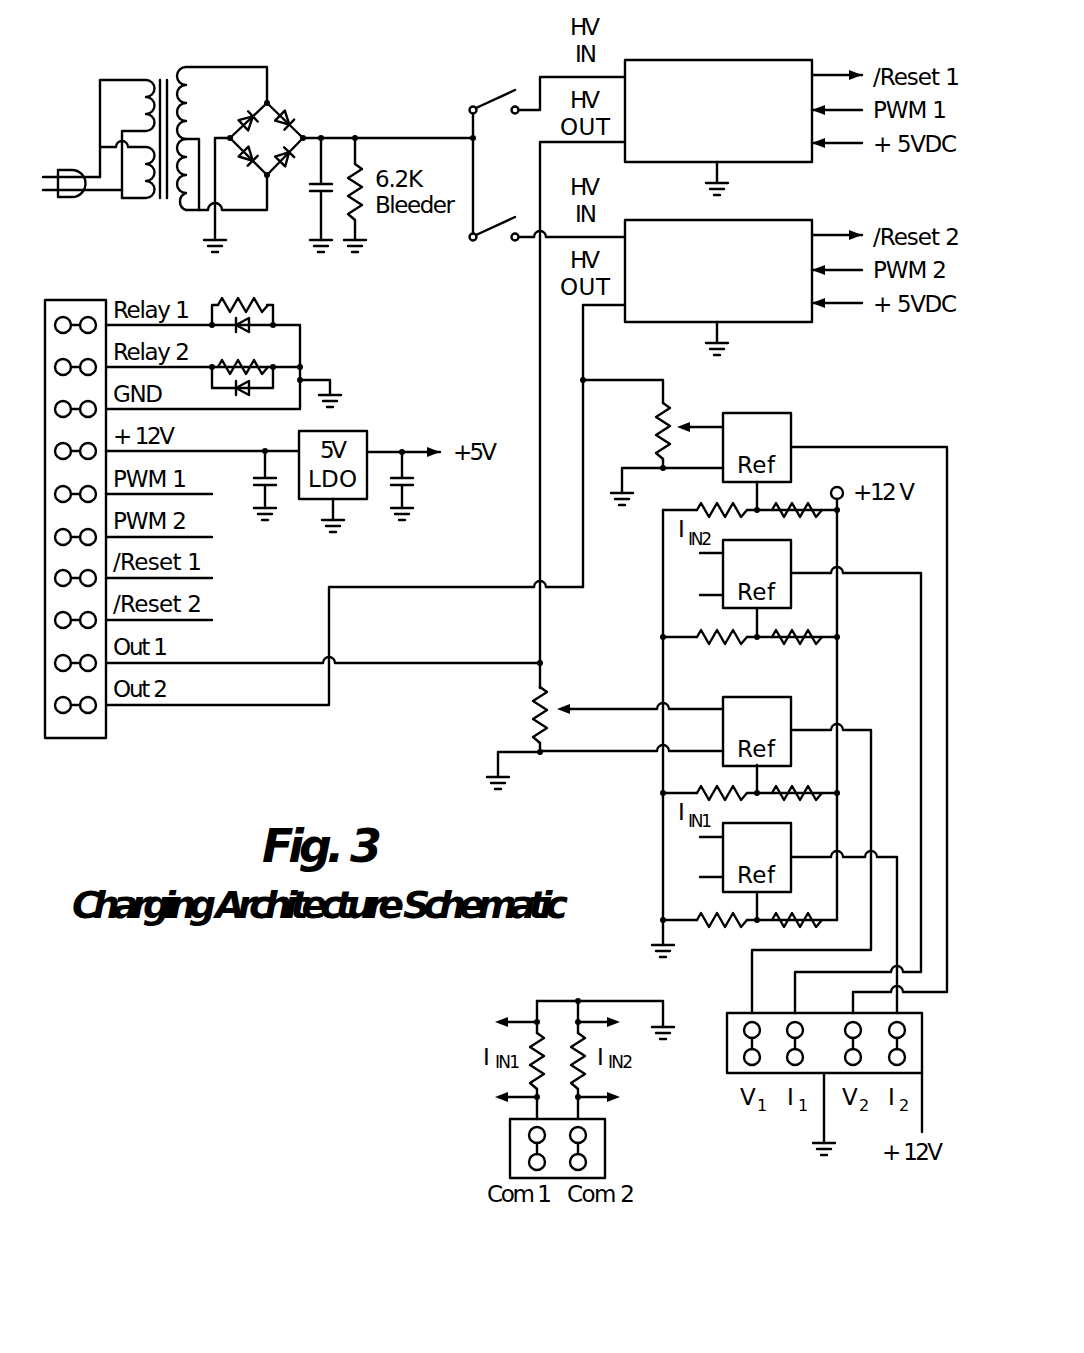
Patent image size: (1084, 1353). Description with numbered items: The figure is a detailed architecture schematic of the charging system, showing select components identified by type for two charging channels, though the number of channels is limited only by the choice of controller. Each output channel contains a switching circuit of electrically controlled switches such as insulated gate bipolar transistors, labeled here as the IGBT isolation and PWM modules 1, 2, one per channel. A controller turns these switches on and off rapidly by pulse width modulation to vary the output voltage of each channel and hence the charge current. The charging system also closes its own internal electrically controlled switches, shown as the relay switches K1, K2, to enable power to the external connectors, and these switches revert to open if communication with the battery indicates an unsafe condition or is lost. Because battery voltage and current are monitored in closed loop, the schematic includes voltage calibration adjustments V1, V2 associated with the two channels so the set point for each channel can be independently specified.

The relay switch K1 is at (548, 112).
The relay switch K2 is at (548, 247).
The IGBT isolation and PWM module # 1 is at (743, 127).
The IGBT isolation and PWM module # 2 is at (743, 287).
The V1 calibration potentiometer V1 is at (601, 727).
The V2 calibration potentiometer V2 is at (665, 442).